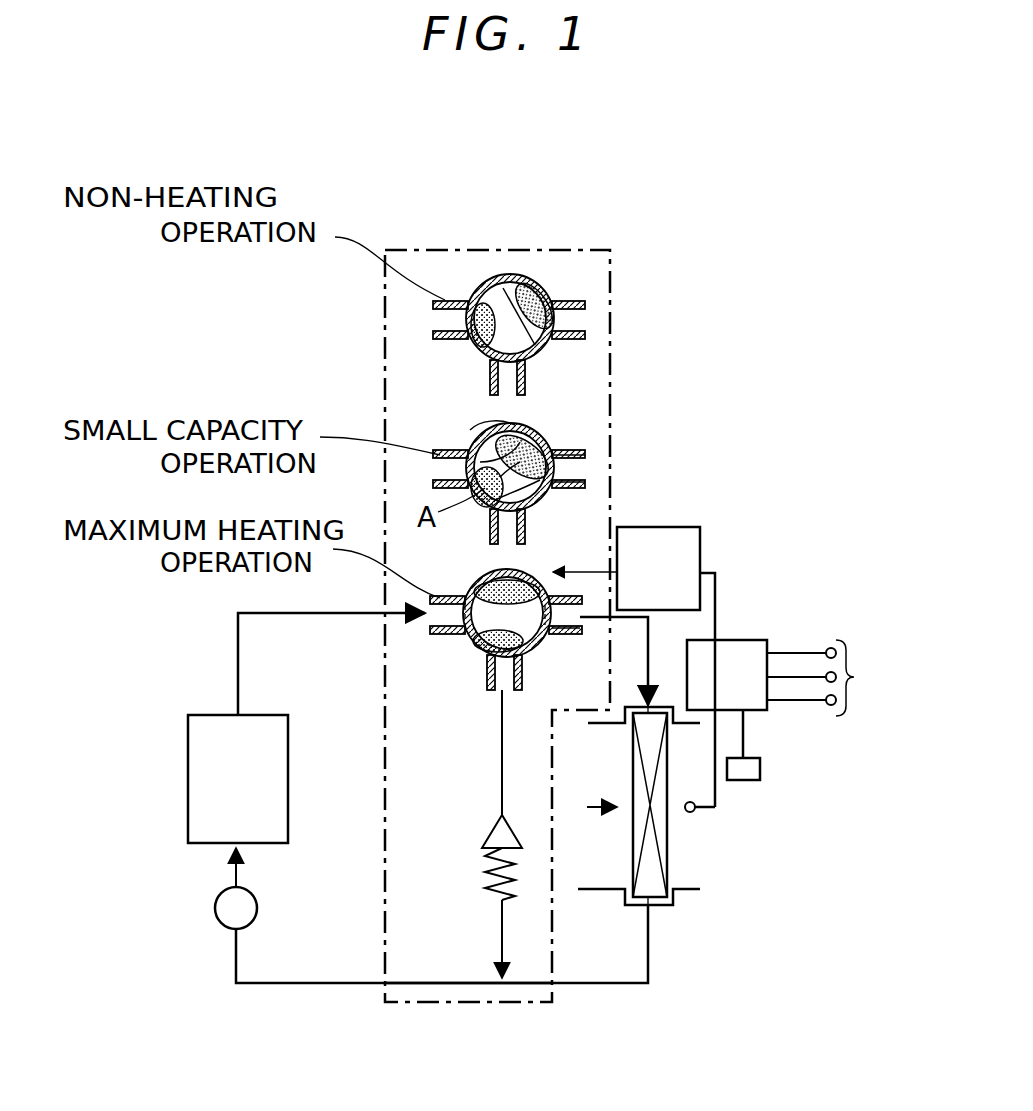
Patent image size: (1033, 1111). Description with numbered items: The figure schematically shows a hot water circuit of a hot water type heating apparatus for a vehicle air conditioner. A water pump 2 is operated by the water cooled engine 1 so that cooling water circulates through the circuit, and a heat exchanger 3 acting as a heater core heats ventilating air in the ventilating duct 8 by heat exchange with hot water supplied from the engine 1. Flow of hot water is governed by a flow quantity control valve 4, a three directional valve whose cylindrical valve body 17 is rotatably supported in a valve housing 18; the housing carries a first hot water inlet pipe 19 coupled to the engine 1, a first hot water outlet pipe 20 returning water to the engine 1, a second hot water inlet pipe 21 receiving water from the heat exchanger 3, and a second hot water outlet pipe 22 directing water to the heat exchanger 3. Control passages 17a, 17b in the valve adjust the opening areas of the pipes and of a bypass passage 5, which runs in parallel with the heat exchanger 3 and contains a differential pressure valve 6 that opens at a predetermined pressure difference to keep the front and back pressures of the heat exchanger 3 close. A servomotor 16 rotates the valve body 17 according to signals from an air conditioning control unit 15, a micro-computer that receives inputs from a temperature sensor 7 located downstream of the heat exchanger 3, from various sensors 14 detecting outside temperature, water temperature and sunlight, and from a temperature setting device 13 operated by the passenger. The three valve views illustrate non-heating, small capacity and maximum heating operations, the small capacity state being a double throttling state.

The water cooled engine 1 is at (190, 760).
The water pump 2 is at (215, 898).
The heat exchanger 3 is at (667, 852).
The flow quantity control valve 4 is at (610, 438).
The bypass passage 5 is at (502, 758).
The differential pressure valve 6 is at (482, 880).
The temperature sensor 7 is at (695, 812).
The ventilating duct 8 is at (600, 890).
The temperature setting device 13 is at (762, 770).
The various sensors 14 is at (855, 677).
The air conditioning control unit 15 is at (742, 640).
The servomotor 16 is at (700, 543).
The valve body 17 is at (552, 292).
The control passage 17a is at (455, 440).
The control passage 17b is at (545, 505).
The valve housing 18 is at (560, 456).
The first hot water inlet pipe 19 is at (440, 638).
The first hot water outlet pipe 20 is at (423, 985).
The second hot water inlet pipe 21 is at (527, 985).
The second hot water outlet pipe 22 is at (556, 480).